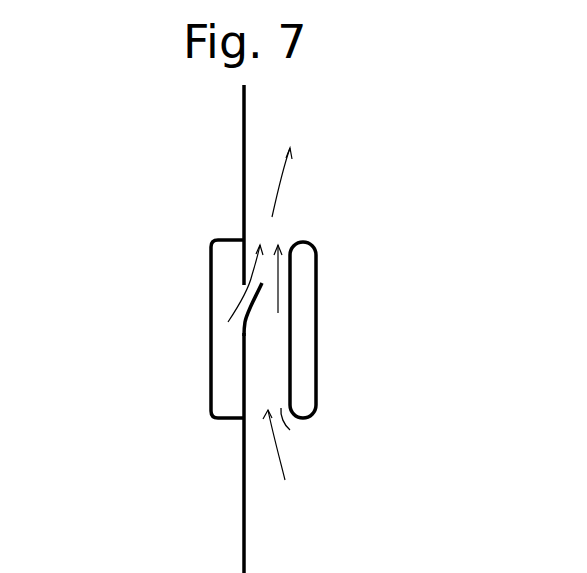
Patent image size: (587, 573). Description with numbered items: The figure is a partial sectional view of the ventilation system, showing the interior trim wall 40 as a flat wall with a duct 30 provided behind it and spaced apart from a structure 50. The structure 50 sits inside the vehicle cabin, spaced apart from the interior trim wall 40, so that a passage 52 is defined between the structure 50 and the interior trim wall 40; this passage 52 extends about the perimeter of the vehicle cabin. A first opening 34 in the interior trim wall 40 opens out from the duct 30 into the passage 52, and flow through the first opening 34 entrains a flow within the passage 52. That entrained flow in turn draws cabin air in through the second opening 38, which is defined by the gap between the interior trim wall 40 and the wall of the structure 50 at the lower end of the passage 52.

The duct 30 is at (229, 371).
The first opening 34 is at (245, 295).
The second opening 38 is at (282, 413).
The interior trim wall 40 is at (248, 523).
The structure 50 is at (303, 330).
The passage 52 is at (268, 368).